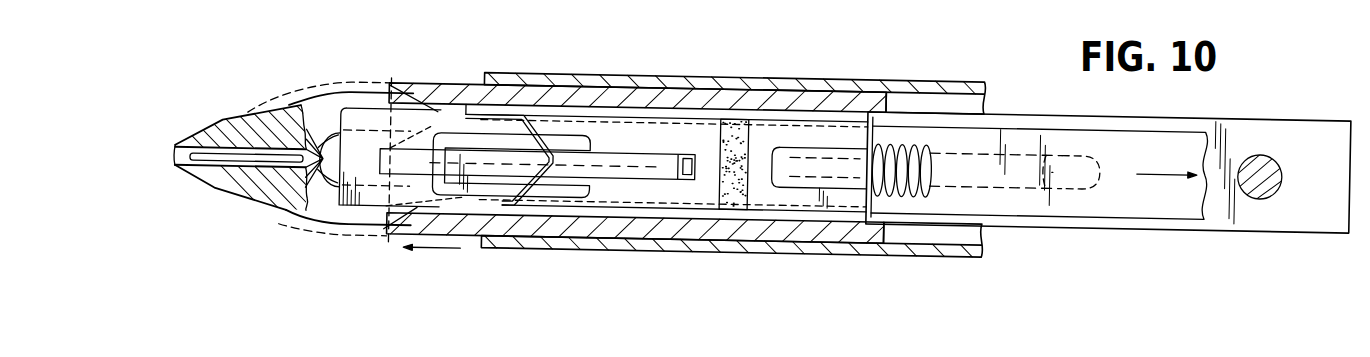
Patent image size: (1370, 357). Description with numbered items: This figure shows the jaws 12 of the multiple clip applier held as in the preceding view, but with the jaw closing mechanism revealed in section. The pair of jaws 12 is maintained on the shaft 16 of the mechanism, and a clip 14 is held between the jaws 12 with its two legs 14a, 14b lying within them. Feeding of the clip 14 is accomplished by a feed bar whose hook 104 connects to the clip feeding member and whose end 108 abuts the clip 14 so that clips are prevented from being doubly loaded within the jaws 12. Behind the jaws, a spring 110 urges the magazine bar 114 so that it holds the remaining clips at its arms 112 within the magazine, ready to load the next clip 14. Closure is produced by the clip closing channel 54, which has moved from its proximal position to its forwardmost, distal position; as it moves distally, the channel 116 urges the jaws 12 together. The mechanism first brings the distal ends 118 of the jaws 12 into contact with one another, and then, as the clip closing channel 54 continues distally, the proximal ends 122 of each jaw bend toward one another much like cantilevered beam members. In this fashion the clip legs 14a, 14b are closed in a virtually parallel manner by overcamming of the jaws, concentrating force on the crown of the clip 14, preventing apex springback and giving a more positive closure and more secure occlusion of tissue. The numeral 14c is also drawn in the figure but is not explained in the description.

The jaws 12 is at (155, 156).
The clip 14 is at (505, 202).
The clip leg 14a is at (228, 114).
The clip leg 14b is at (220, 201).
The jaw flexure region 14c is at (308, 216).
The shaft 16 is at (790, 87).
The clip closing channel 54 is at (470, 92).
The hook 104 is at (705, 124).
The end 108 is at (597, 117).
The spring 110 is at (913, 200).
The arms 112 is at (542, 112).
The magazine bar 114 is at (627, 122).
The channel 116 is at (396, 86).
The distal ends 118 is at (174, 143).
The proximal ends 122 is at (422, 120).